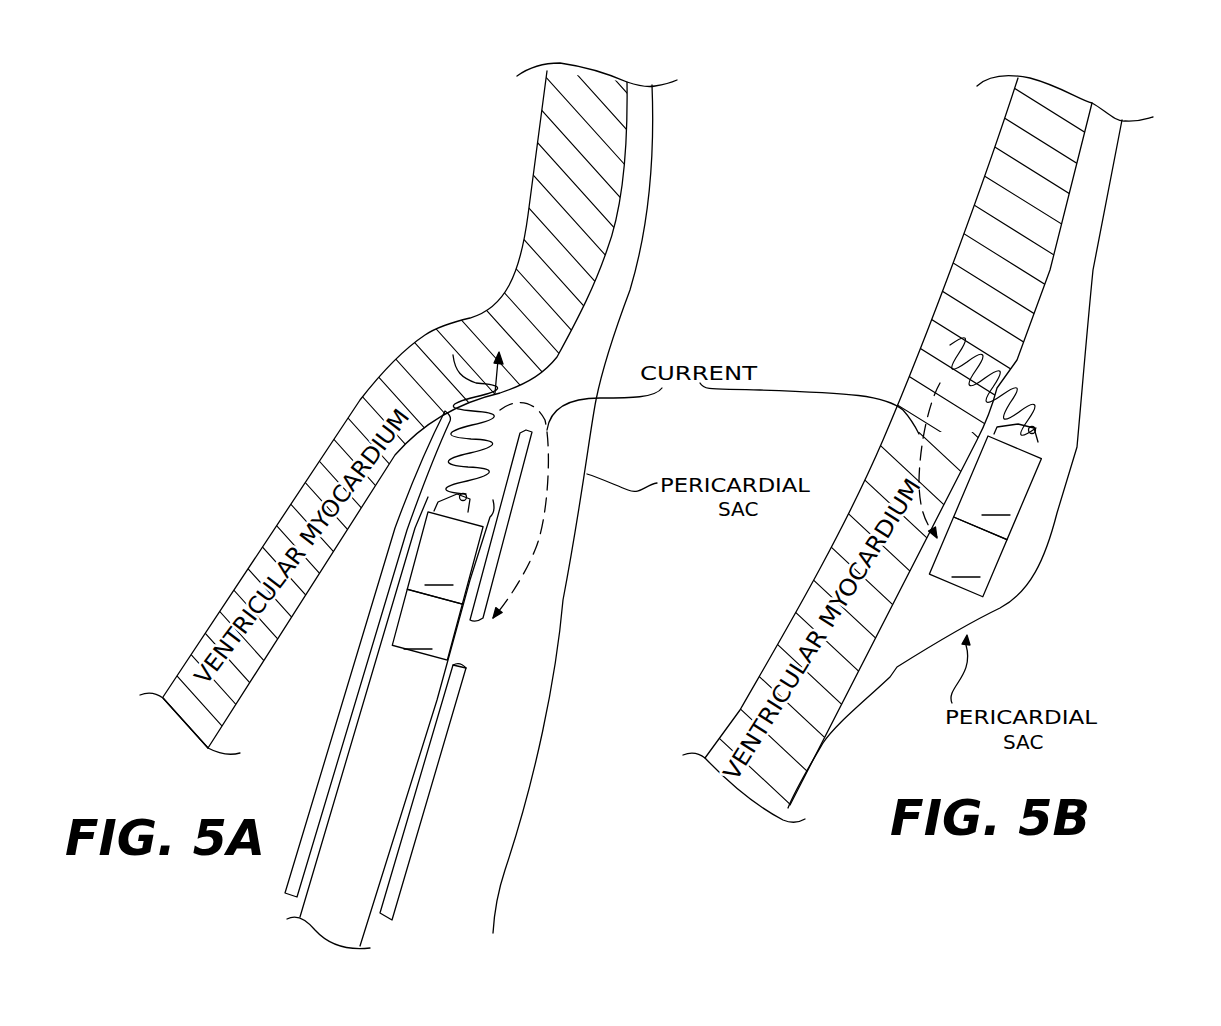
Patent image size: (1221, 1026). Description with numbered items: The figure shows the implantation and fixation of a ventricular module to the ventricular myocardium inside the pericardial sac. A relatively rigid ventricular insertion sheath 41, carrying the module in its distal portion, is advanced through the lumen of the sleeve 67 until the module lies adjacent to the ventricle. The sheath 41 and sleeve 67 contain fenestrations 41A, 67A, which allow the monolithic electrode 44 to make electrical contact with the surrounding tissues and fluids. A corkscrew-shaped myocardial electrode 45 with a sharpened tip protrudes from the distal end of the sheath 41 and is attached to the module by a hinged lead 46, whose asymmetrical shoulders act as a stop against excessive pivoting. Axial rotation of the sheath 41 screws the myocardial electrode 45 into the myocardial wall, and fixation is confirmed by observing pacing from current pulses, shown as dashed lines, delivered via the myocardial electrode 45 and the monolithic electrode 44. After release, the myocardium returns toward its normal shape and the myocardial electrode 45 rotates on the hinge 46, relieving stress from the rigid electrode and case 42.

In FIG. 5A, the ventricular insertion sheath 41 is at (380, 934).
In FIG. 5A, the fenestration 41A is at (462, 630).
In FIG. 5A, the case 42 is at (445, 558).
In FIG. 5B, the case 42 is at (998, 488).
In FIG. 5A, the monolithic electrode 44 is at (427, 624).
In FIG. 5B, the monolithic electrode 44 is at (968, 557).
In FIG. 5A, the myocardial electrode 45 is at (470, 382).
In FIG. 5B, the myocardial electrode 45 is at (1010, 368).
In FIG. 5A, the hinged lead 46 is at (467, 507).
In FIG. 5B, the hinged lead 46 is at (1038, 440).
In FIG. 5A, the sleeve 67 is at (447, 733).
In FIG. 5A, the fenestration 67A is at (467, 660).